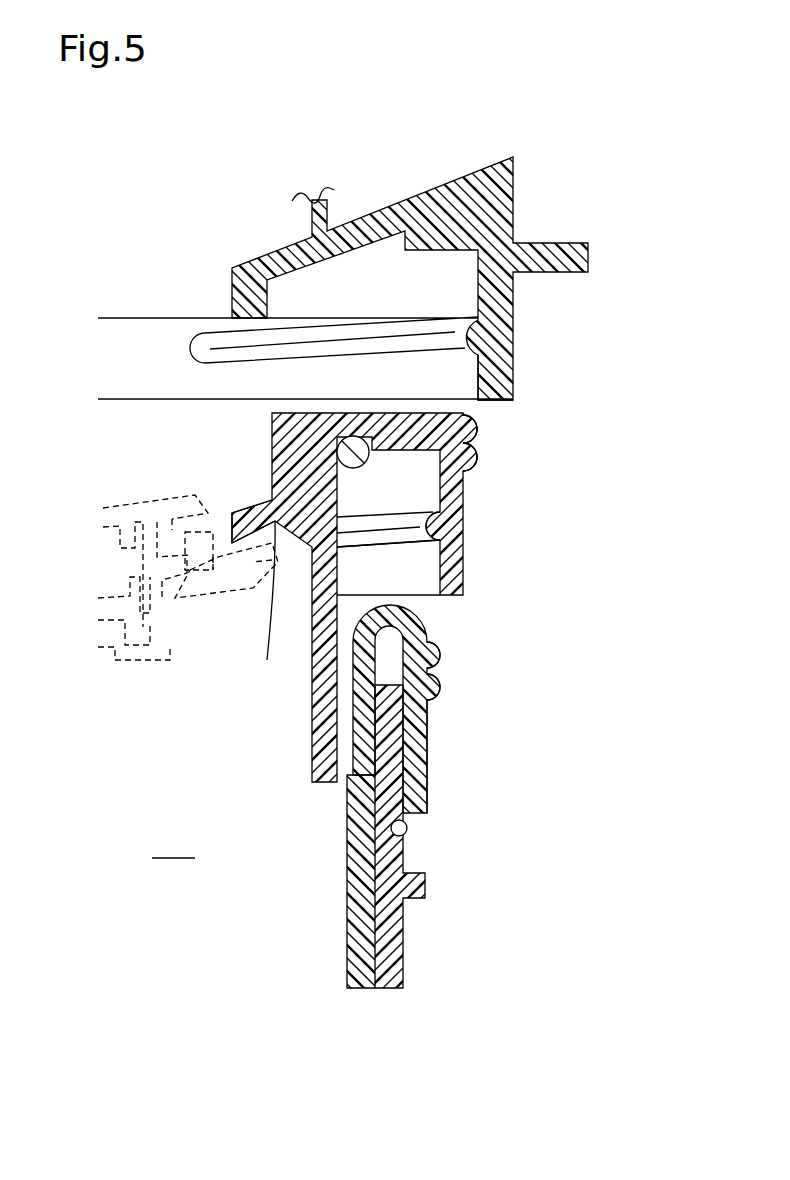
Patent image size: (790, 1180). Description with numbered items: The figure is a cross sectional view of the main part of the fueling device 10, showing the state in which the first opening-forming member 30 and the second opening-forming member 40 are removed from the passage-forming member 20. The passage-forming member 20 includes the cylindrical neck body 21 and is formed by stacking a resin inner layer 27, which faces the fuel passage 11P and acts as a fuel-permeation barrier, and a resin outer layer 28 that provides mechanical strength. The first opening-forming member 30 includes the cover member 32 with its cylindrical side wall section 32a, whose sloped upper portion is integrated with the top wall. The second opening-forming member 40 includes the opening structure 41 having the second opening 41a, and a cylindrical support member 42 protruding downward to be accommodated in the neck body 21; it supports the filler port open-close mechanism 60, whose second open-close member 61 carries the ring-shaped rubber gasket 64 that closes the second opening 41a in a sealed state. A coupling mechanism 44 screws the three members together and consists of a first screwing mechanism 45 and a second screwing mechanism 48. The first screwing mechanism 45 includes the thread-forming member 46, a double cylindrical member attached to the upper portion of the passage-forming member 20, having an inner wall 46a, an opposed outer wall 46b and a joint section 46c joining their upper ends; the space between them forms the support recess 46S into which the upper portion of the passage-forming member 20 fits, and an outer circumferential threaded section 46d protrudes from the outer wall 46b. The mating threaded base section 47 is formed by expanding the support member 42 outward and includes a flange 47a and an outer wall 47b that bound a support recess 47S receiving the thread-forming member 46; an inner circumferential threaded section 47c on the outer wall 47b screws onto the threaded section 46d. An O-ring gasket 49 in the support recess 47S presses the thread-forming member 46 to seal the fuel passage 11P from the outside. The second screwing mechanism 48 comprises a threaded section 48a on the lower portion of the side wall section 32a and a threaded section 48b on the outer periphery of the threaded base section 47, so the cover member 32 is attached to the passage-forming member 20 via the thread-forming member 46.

The fueling device 10 is at (395, 590).
The first opening-forming member 30 is at (395, 590).
The cover member 32 is at (513, 197).
The side wall section 32a is at (513, 300).
The coupling mechanism 44 is at (395, 590).
The second screwing mechanism 48 is at (582, 413).
The threaded section 48a is at (478, 366).
The threaded section 48b is at (555, 441).
The gasket 49 is at (337, 458).
The second opening 41a is at (222, 525).
The second open-close member 61 is at (100, 520).
The filler port open-close mechanism 60 is at (116, 577).
The support recess 47S is at (404, 497).
The flange 47a is at (463, 473).
The outer wall 47b is at (465, 515).
The inner circumferential threaded section 47c is at (423, 540).
The threaded base section 47 is at (395, 590).
The first screwing mechanism 45 is at (395, 590).
The outer circumferential threaded section 46d is at (435, 652).
The joint section 46c is at (435, 684).
The outer wall 46b is at (430, 723).
The inner wall 46a is at (510, 780).
The thread-forming member 46 is at (395, 590).
The support recess 46S is at (425, 800).
The neck body 21 is at (395, 590).
The passage-forming member 20 is at (395, 590).
The resin outer layer 28 is at (405, 927).
The resin inner layer 27 is at (372, 972).
The gasket 64 is at (195, 568).
The second opening-forming member 40 is at (395, 590).
The opening structure 41 is at (267, 660).
The support member 42 is at (312, 744).
The fuel passage 11P is at (173, 846).